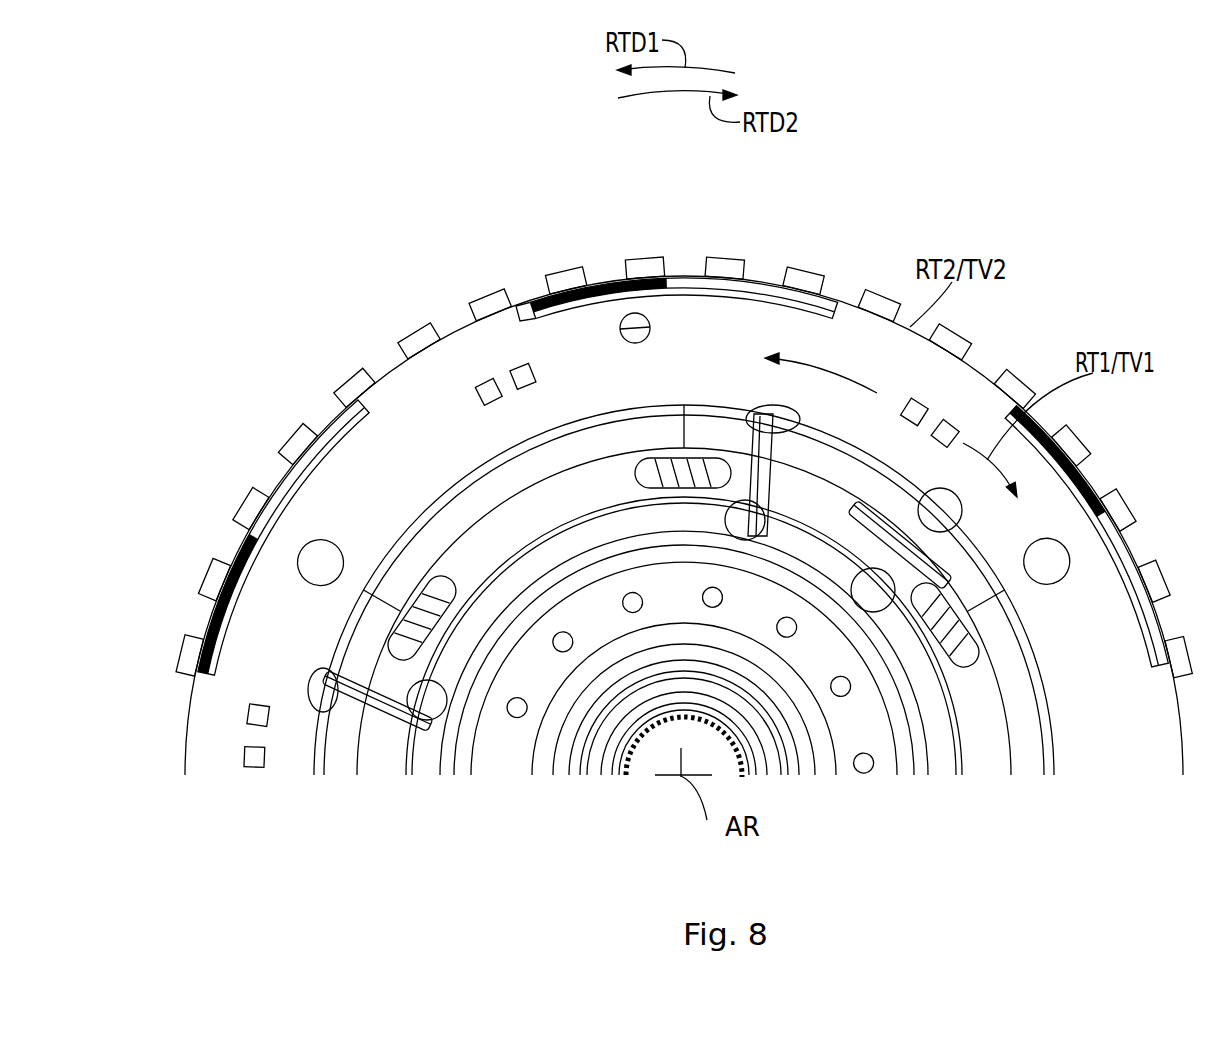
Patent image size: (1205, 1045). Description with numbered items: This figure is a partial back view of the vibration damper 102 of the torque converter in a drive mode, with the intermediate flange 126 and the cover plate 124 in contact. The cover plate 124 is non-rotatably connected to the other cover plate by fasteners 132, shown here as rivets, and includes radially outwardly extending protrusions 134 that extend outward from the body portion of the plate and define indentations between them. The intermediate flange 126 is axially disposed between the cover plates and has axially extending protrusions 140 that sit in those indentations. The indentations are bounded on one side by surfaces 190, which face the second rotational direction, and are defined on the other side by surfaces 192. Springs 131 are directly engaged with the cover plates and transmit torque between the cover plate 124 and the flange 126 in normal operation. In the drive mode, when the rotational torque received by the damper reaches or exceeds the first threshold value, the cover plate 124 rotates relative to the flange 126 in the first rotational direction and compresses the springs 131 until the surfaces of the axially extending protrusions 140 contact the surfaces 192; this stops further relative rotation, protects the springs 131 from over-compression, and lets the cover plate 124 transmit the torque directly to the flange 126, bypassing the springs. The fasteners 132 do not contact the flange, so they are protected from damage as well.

The vibration damper 102 is at (975, 133).
The cover plate 124 is at (528, 308).
The intermediate flange 126 is at (683, 277).
The springs 131 is at (702, 467).
The fasteners 132 is at (473, 400).
The radially outwardly extending protrusions 134 is at (978, 360).
The axially extending protrusions 140 is at (600, 288).
The surfaces bounding indentations in direction RTD2 190 is at (413, 332).
The surfaces defining indentations in direction RTD2 192 is at (455, 323).